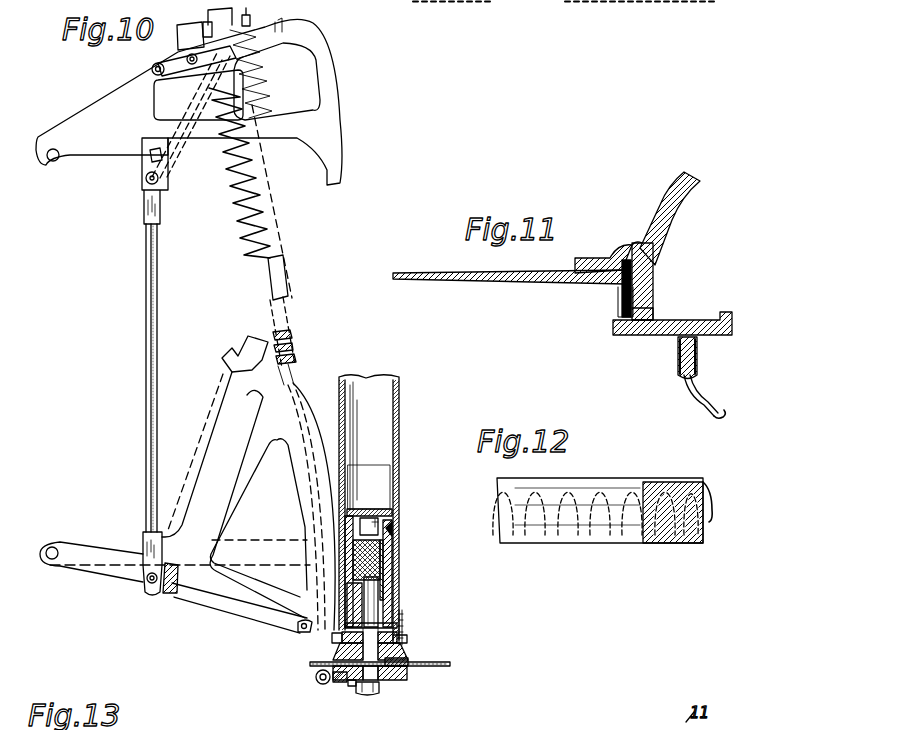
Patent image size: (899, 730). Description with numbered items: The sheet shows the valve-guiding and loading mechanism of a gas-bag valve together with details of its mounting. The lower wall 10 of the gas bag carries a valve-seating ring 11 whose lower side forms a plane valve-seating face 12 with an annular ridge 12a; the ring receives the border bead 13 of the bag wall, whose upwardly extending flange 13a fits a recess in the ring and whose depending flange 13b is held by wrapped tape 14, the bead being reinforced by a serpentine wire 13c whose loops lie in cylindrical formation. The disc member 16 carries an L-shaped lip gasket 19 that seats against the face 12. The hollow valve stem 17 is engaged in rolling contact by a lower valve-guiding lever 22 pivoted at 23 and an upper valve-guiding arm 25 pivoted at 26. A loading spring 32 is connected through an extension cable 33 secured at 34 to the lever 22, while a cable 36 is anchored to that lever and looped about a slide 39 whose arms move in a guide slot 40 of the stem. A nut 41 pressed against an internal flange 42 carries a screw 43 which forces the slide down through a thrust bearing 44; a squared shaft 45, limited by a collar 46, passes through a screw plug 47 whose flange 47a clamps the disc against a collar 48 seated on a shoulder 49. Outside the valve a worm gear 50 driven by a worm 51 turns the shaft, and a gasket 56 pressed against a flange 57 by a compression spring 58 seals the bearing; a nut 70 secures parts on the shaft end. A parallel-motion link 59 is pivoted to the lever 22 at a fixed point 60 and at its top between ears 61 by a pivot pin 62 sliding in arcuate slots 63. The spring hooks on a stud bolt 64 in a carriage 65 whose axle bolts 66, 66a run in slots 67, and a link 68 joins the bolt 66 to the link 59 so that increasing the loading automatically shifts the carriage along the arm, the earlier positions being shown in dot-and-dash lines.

In FIG. 11, the lower wall of gas bag 10 is at (554, 284).
In FIG. 11, the valve-seating ring 11 is at (675, 195).
In FIG. 11, the valve-seating face 12 is at (700, 342).
In FIG. 11, the annular ridge 12a is at (680, 340).
In FIG. 11, the border member or bead 13 is at (654, 274).
In FIG. 12, the border member or bead 13 is at (615, 478).
In FIG. 11, the upwardly extending annular flange 13a is at (642, 244).
In FIG. 11, the depending annular flange 13b is at (640, 314).
In FIG. 12, the serpentine reinforcing wire 13c is at (716, 510).
In FIG. 11, the tape 14 is at (618, 303).
In FIG. 10, the disc member 16 is at (450, 664).
In FIG. 11, the disc member 16 is at (720, 418).
In FIG. 10, the valve stem 17 is at (400, 418).
In FIG. 11, the lip gasket 19 is at (700, 354).
In FIG. 10, the segmental valve-guiding lever 22 is at (238, 498).
In FIG. 10, the pivot 23 is at (50, 562).
In FIG. 10, the segmental valve-guiding arm 25 is at (342, 92).
In FIG. 10, the pivot 26 is at (48, 162).
In FIG. 10, the loading spring 32 is at (236, 196).
In FIG. 10, the extension cable 33 is at (290, 380).
In FIG. 10, the cable securing point 34 is at (300, 630).
In FIG. 10, the cable 36 is at (402, 612).
In FIG. 10, the slide 39 is at (408, 640).
In FIG. 10, the guide slot 40 is at (394, 580).
In FIG. 10, the nut 41 is at (392, 536).
In FIG. 10, the internal flange 42 is at (382, 500).
In FIG. 10, the screw 43 is at (382, 560).
In FIG. 10, the thrust bearing 44 is at (398, 630).
In FIG. 10, the squared shaft 45 is at (380, 525).
In FIG. 10, the collar 46 is at (392, 513).
In FIG. 10, the screw plug 47 is at (390, 668).
In FIG. 10, the lateral flange 47a is at (404, 672).
In FIG. 10, the collar 48 is at (412, 660).
In FIG. 10, the shoulder 49 is at (338, 652).
In FIG. 10, the worm gear 50 is at (336, 680).
In FIG. 10, the worm 51 is at (316, 676).
In FIG. 10, the gasket 56 is at (352, 610).
In FIG. 10, the flange 57 is at (372, 614).
In FIG. 10, the compression spring 58 is at (350, 684).
In FIG. 10, the link 59 is at (146, 306).
In FIG. 10, the fixed pivot point 60 is at (152, 584).
In FIG. 10, the ear 61 is at (142, 170).
In FIG. 10, the pivot pin 62 is at (160, 181).
In FIG. 10, the arcuate slot 63 is at (162, 153).
In FIG. 10, the adjustable stud bolt 64 is at (222, 26).
In FIG. 10, the carriage member 65 is at (177, 38).
In FIG. 10, the axle bolt 66 is at (260, 63).
In FIG. 10, the axle bolt 66a is at (151, 69).
In FIG. 10, the slot 67 is at (175, 92).
In FIG. 10, the link 68 is at (175, 102).
In FIG. 10, the nut 70 is at (360, 692).